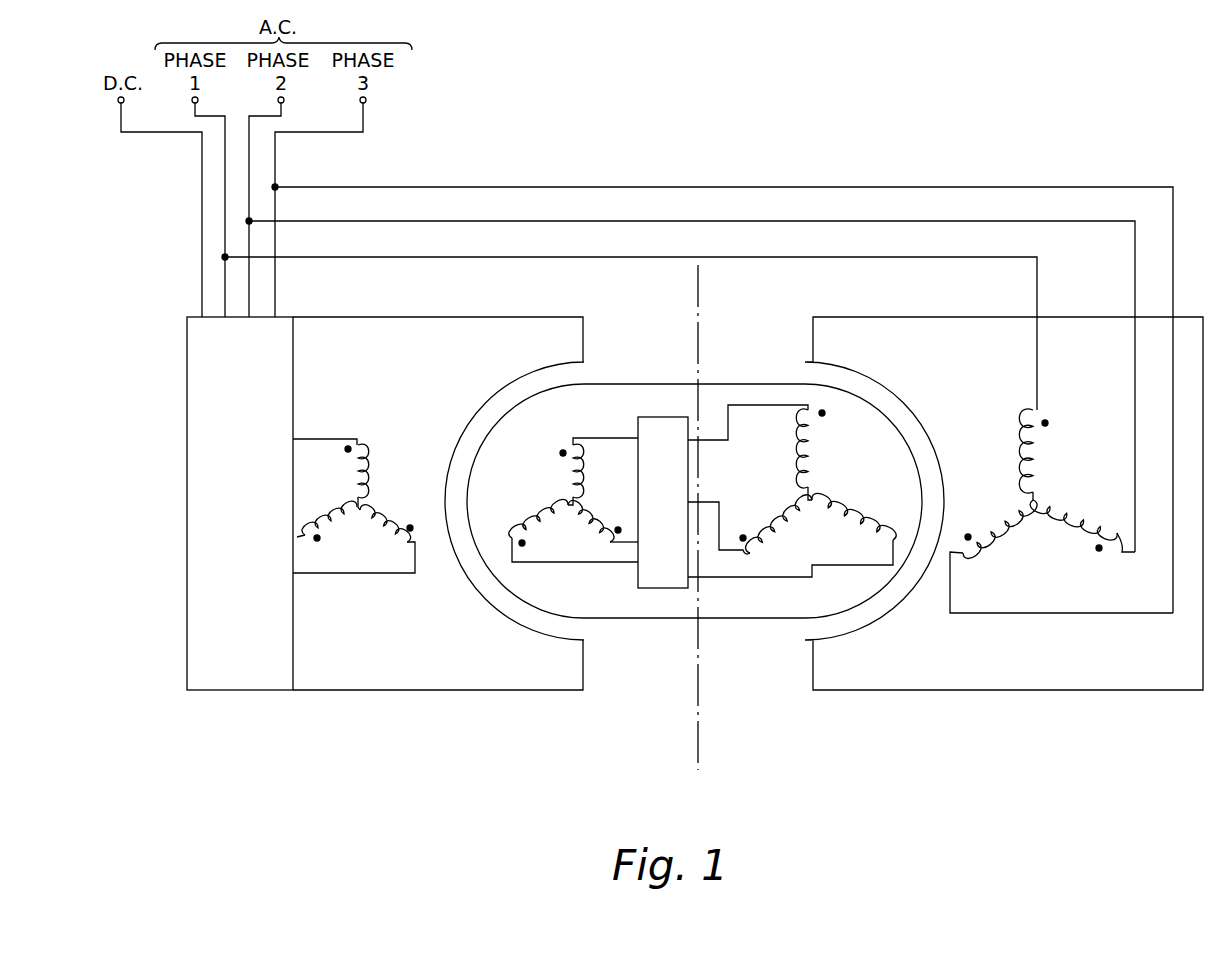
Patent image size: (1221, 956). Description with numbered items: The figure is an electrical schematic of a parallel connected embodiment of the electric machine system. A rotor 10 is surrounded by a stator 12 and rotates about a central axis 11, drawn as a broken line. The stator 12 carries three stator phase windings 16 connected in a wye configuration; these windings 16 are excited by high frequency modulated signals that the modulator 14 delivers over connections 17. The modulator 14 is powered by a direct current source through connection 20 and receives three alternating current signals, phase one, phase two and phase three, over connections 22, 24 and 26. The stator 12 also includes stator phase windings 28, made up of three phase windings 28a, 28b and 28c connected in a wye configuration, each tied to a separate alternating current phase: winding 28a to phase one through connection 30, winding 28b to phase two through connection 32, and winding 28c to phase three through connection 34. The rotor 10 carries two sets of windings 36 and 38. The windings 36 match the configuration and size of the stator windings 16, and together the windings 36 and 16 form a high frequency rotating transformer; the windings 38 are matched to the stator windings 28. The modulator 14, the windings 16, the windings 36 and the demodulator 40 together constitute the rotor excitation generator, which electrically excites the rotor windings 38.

The rotor 10 is at (735, 387).
The central axis 11 is at (698, 300).
The stator 12 is at (470, 680).
The modulator 14 is at (233, 683).
The stator phase windings 16 is at (354, 558).
The connections 17 is at (327, 438).
The connection 20 is at (202, 145).
The connection 22 is at (225, 163).
The connection 24 is at (252, 158).
The connection 26 is at (277, 174).
The stator phase windings 28 is at (1061, 492).
The phase winding 28a is at (1035, 443).
The phase winding 28b is at (1073, 500).
The phase winding 28c is at (1012, 537).
The connection 30 is at (523, 257).
The connection 32 is at (565, 221).
The connection 34 is at (612, 187).
The rotor windings 36 is at (557, 488).
The rotor windings 38 is at (824, 482).
The demodulator 40 is at (660, 590).